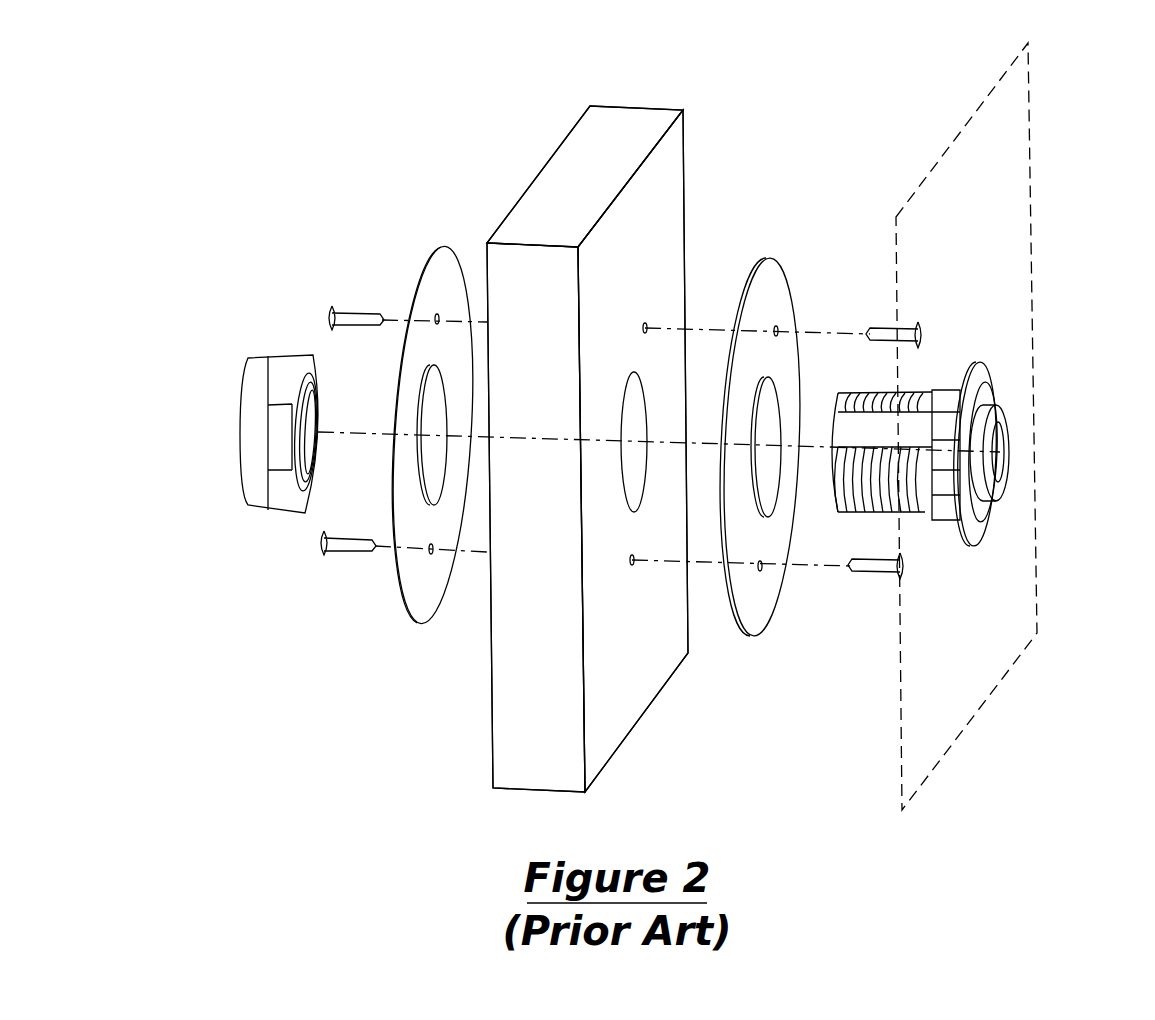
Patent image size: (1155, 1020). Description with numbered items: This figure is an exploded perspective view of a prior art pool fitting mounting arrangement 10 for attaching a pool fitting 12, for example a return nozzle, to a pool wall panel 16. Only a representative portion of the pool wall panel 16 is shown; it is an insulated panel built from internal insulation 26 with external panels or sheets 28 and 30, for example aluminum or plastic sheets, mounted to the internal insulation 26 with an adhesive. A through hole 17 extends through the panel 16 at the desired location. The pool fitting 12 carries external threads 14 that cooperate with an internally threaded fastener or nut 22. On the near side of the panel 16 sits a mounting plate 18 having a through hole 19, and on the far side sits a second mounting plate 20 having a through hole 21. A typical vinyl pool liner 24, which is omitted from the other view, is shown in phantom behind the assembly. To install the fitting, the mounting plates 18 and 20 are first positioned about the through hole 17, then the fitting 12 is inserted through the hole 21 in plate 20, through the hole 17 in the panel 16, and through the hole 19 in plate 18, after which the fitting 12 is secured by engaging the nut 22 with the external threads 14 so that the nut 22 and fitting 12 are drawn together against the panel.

The pool fitting mounting arrangement 10 is at (825, 188).
The pool fitting 12 is at (1006, 441).
The external threads 14 is at (895, 406).
The pool wall panel 16 is at (551, 155).
The through hole 17 is at (626, 398).
The mounting plate 18 is at (428, 272).
The through hole 19 is at (447, 468).
The mounting plate 20 is at (775, 285).
The through hole 21 is at (778, 486).
The nut 22 is at (255, 420).
The pool liner 24 is at (1033, 212).
The internal insulation 26 is at (617, 145).
The external panel 28 is at (523, 198).
The external panel 30 is at (665, 241).